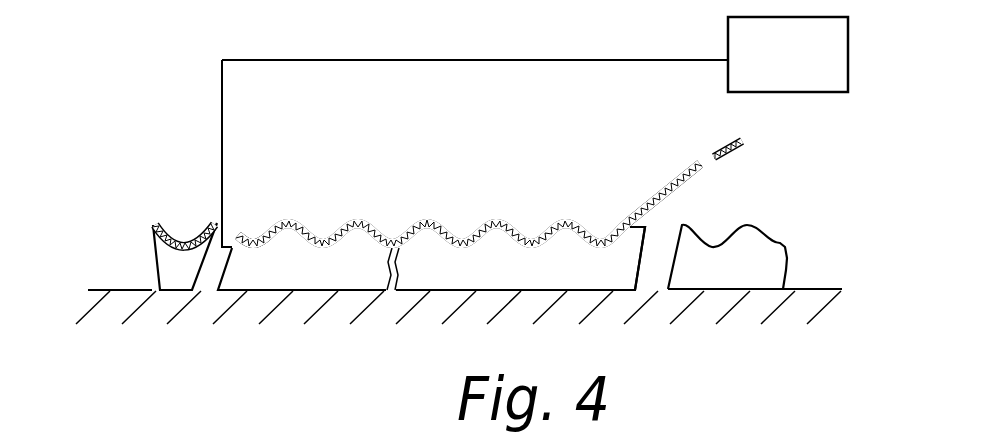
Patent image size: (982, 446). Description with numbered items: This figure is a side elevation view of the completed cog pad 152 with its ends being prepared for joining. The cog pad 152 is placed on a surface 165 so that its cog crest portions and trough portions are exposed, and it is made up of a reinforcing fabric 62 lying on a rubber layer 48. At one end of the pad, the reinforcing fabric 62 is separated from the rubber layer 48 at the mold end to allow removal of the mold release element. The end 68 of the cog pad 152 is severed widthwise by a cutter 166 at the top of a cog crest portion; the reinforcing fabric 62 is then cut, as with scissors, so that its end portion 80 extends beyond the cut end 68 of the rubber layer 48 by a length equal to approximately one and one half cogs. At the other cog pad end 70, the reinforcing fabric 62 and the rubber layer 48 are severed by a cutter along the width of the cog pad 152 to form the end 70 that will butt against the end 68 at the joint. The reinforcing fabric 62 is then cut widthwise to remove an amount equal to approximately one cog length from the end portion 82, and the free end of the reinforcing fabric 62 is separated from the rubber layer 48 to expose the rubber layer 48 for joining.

The rubber layer 48 is at (318, 270).
The reinforcing fabric 62 is at (319, 243).
The end of the cog pad 68 is at (633, 256).
The cog pad end 70 is at (228, 258).
The end portion 80 is at (668, 185).
The end portion 82 is at (255, 243).
The cog pad 152 is at (146, 222).
The surface 165 is at (804, 288).
The cutter 166 is at (810, 85).